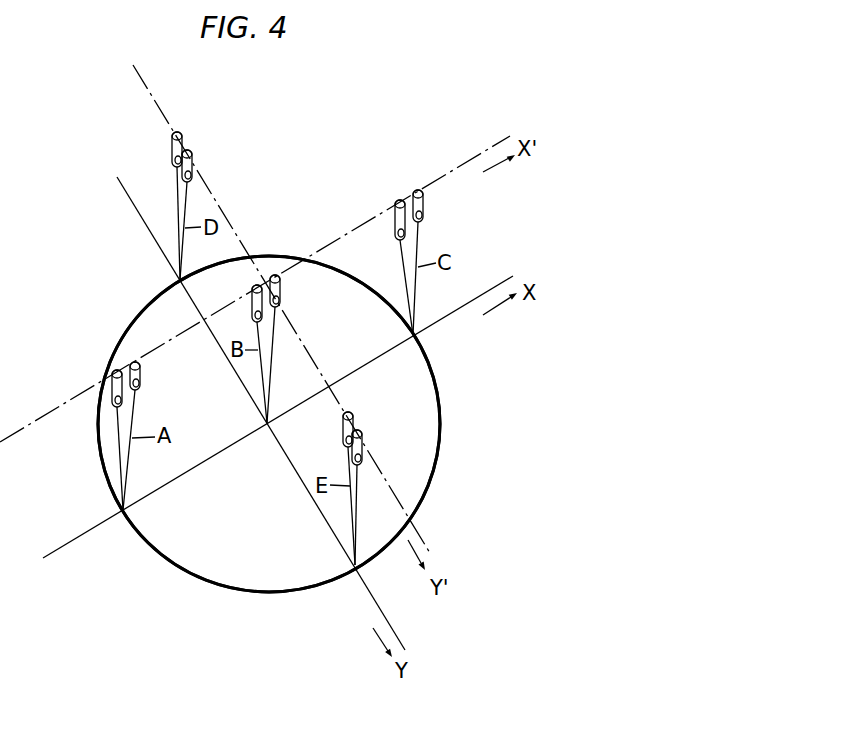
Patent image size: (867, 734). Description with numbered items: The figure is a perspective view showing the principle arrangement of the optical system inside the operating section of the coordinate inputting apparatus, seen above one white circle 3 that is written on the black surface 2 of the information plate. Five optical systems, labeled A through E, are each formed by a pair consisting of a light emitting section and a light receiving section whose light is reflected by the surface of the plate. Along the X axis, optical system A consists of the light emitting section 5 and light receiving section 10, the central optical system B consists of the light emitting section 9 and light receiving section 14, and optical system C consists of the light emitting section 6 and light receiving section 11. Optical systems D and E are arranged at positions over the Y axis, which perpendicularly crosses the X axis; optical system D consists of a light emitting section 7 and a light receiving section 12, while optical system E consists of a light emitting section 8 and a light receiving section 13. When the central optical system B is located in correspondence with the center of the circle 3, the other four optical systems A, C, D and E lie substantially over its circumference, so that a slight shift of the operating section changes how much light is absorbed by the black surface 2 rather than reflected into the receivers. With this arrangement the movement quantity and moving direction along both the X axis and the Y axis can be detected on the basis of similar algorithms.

The black surface 2 is at (150, 577).
The white circle 3 is at (225, 580).
The light emitting section 5 is at (112, 390).
The light emitting section 6 is at (423, 207).
The light emitting section 7 is at (172, 151).
The light emitting section 8 is at (362, 452).
The light emitting section 9 is at (252, 302).
The light receiving section 10 is at (140, 377).
The light receiving section 11 is at (395, 217).
The light receiving section 12 is at (192, 168).
The light receiving section 13 is at (343, 433).
The light receiving section 14 is at (280, 295).